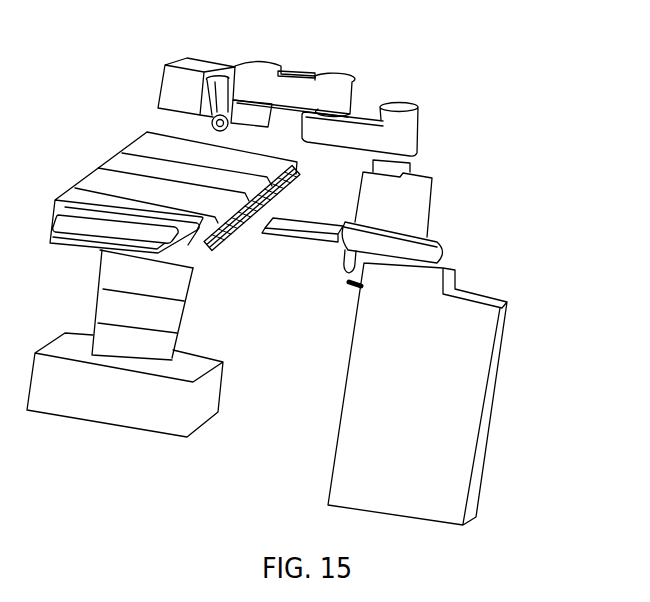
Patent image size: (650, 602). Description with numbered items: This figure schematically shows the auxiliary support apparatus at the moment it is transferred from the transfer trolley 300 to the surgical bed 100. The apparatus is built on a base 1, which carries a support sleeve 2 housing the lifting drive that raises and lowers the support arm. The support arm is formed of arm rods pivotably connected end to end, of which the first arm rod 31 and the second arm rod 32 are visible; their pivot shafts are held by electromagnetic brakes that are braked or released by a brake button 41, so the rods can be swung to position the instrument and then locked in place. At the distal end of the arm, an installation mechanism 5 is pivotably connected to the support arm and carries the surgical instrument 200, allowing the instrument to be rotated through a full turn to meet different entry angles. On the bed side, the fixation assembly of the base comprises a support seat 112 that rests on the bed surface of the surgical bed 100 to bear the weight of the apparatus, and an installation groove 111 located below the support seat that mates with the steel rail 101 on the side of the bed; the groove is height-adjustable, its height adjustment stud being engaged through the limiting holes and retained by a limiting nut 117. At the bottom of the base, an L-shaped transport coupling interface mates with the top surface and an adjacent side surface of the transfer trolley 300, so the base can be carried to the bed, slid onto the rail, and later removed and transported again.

The surgical bed 100 is at (83, 155).
The steel rail 101 is at (220, 247).
The support seat 112 is at (288, 232).
The installation groove 111 is at (343, 268).
The limiting nut 117 is at (352, 289).
The surgical instrument 200 is at (184, 60).
The installation mechanism 5 is at (232, 72).
The second arm rod 32 is at (306, 91).
The brake button 41 is at (295, 71).
The first arm rod 31 is at (361, 127).
The support sleeve 2 is at (424, 197).
The base 1 is at (440, 245).
The transfer trolley 300 is at (477, 360).